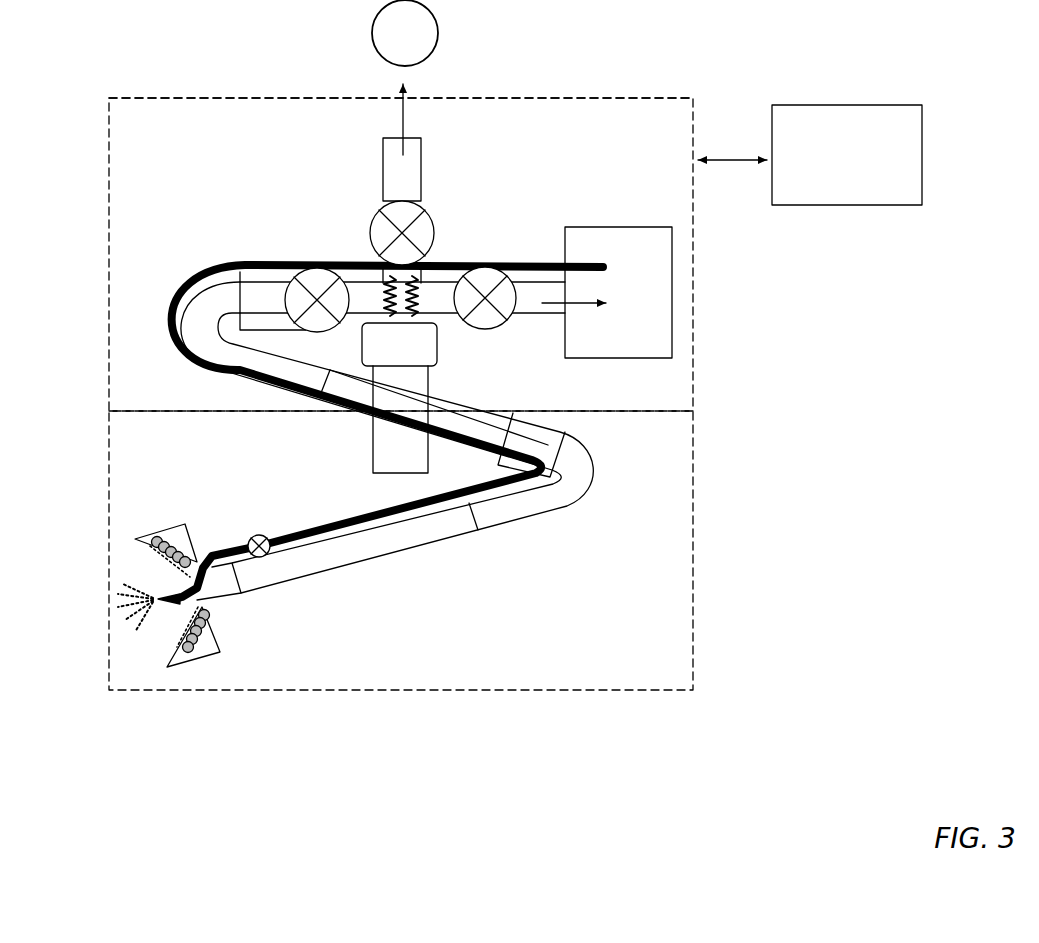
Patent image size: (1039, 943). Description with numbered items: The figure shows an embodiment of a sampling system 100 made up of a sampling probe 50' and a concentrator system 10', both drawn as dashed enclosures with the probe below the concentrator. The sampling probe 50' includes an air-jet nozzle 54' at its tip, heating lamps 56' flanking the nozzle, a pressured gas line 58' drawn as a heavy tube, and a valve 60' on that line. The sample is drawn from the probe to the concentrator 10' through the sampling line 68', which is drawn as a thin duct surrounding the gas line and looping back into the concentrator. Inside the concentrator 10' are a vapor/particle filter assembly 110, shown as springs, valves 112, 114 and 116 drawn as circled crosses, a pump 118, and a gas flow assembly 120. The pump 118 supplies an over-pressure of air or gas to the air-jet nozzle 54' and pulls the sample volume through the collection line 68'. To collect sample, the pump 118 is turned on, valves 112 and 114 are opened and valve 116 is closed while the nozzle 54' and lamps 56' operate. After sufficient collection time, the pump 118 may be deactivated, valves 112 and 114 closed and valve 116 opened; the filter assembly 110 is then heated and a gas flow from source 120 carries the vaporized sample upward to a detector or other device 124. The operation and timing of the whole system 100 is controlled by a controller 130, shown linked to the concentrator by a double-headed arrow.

The sampling system 100 is at (408, 742).
The concentrator system 10' is at (459, 254).
The sampling probe 50' is at (458, 550).
The air-jet nozzle 54' is at (119, 584).
The heating lamps 56' is at (188, 566).
The pressured gas line 58' is at (387, 432).
The valve 60' is at (285, 506).
The sampling line 68' is at (387, 436).
The vapor/particle filter assembly 110 is at (381, 296).
The valve 112 is at (316, 267).
The valve 114 is at (487, 266).
The valve 116 is at (396, 200).
The pump 118 is at (607, 292).
The gas flow assembly 120 is at (442, 347).
The detector 124 is at (405, 77).
The controller 130 is at (810, 155).